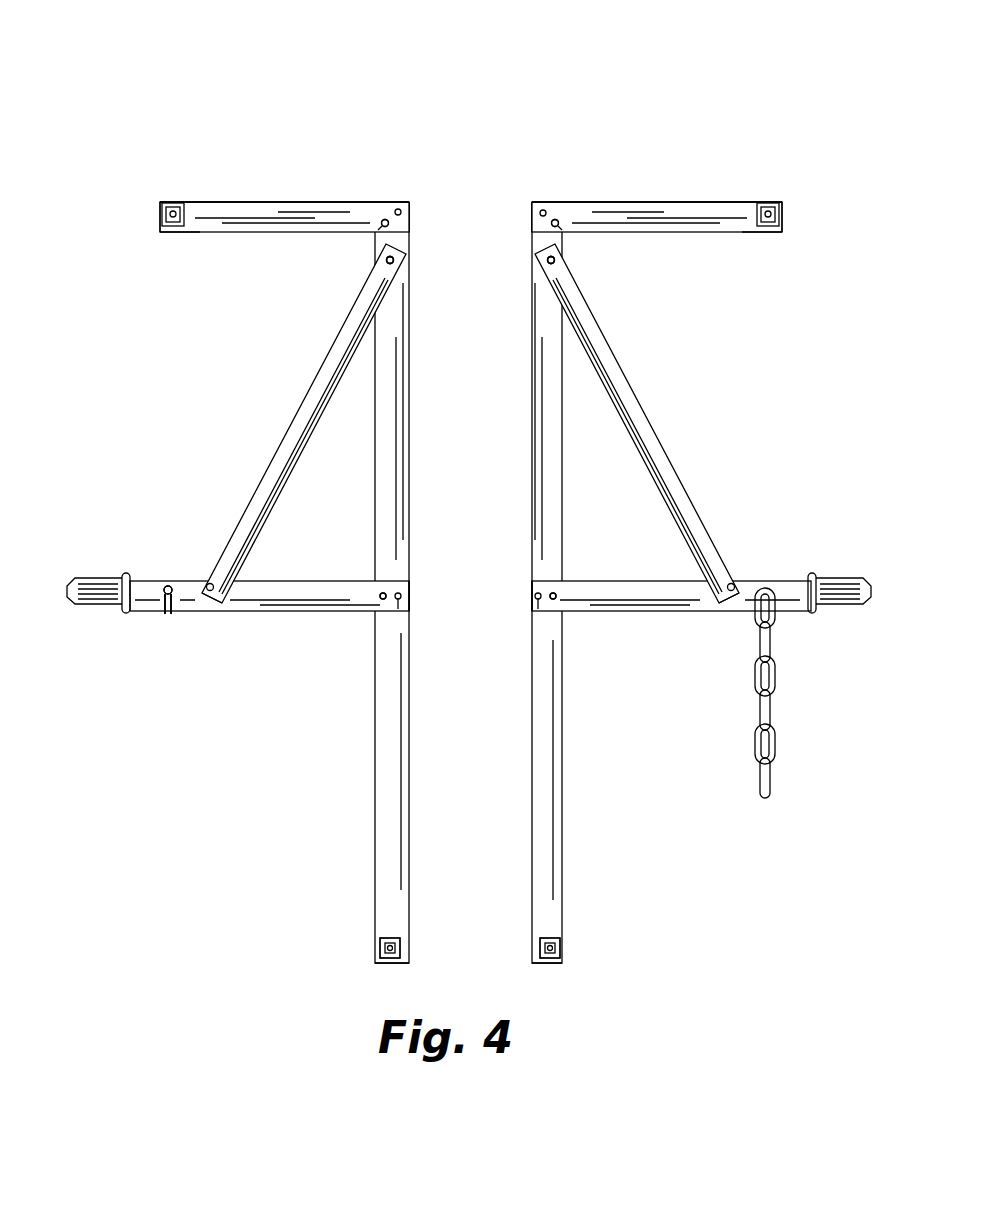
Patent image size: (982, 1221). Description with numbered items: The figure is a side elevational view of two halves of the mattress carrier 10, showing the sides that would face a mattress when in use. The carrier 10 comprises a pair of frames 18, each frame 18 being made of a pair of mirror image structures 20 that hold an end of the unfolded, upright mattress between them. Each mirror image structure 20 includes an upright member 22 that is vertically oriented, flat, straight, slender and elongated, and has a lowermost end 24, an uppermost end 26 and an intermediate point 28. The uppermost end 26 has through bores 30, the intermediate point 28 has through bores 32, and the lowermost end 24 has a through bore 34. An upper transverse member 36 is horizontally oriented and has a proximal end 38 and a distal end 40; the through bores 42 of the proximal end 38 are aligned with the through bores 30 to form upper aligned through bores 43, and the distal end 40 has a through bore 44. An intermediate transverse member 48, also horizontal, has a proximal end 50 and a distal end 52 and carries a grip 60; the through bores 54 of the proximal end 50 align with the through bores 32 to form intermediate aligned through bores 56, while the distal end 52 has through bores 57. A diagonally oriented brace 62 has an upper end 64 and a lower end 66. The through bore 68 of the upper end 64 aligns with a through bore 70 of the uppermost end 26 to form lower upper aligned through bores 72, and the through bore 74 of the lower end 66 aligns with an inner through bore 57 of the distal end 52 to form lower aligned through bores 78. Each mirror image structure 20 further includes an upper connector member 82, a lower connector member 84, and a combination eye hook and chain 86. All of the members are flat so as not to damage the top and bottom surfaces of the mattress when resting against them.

The carrier 10 is at (413, 198).
The frame 18 is at (413, 198).
The mirror image structure 20 is at (529, 198).
The upright member 22 is at (412, 374).
The lowermost end 24 is at (552, 964).
The uppermost end 26 is at (528, 230).
The intermediate point 28 is at (530, 585).
The through bores 30 is at (397, 209).
The through bores 32 is at (534, 613).
The through bore 34 is at (542, 940).
The upper transverse member 36 is at (268, 236).
The proximal end 38 is at (518, 228).
The distal end 40 is at (160, 215).
The through bores 42 is at (382, 221).
The upper aligned through bores 43 is at (382, 221).
The through bore 44 is at (173, 203).
The intermediate transverse member 48 is at (345, 612).
The proximal end 50 is at (532, 592).
The through bores 54 is at (380, 595).
The intermediate aligned through bores 56 is at (380, 595).
The through bores 57 is at (164, 614).
The grip 60 is at (66, 592).
The brace 62 is at (300, 393).
The upper end 64 is at (545, 258).
The lower end 66 is at (225, 606).
The through bore 68 is at (548, 262).
The through bore 70 is at (395, 262).
The lower upper aligned through bores 72 is at (548, 262).
The through bore 74 is at (207, 583).
The lower aligned through bores 78 is at (180, 614).
The upper connector member 82 is at (160, 233).
The lower connector member 84 is at (378, 948).
The combination eye hook and chain 86 is at (170, 616).
The distal end 52 is at (126, 574).